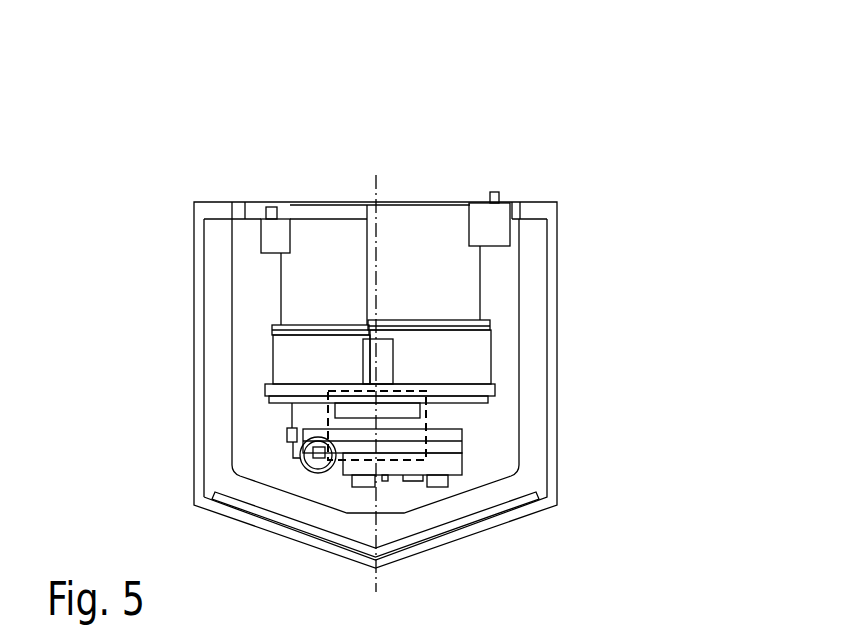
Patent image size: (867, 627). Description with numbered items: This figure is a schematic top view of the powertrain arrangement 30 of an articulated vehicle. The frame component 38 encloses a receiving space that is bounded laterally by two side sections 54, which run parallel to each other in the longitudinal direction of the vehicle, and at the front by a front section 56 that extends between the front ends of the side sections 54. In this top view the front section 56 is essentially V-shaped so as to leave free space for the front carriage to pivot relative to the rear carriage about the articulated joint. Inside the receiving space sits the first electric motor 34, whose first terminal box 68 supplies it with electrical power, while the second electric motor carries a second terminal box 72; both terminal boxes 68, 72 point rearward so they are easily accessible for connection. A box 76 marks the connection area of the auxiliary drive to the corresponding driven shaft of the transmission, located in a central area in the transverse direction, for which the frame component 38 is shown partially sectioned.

The powertrain arrangement 30 is at (657, 150).
The frame component 38 is at (180, 210).
The side sections 54 is at (210, 395).
The front section 56 is at (457, 537).
The second terminal box 72 is at (268, 230).
The first terminal box 68 is at (492, 225).
The first electric motor 34 is at (297, 284).
The box 76 is at (425, 449).